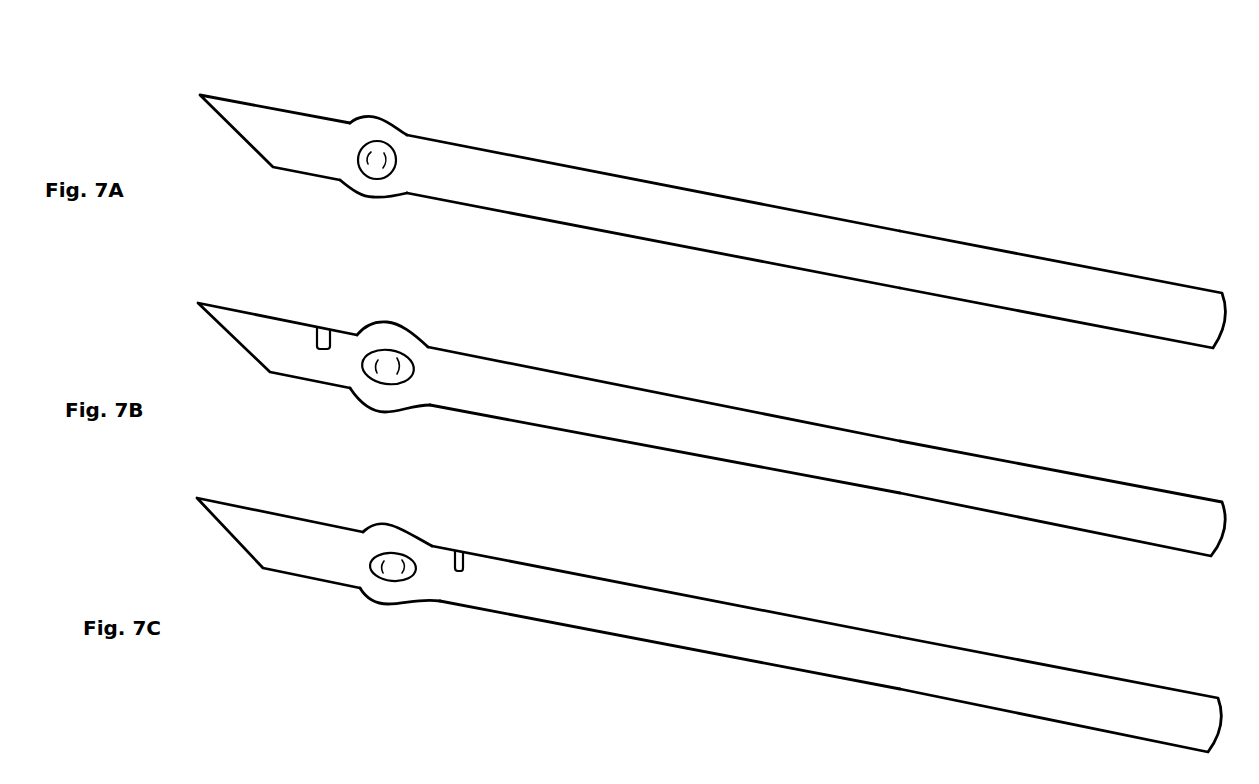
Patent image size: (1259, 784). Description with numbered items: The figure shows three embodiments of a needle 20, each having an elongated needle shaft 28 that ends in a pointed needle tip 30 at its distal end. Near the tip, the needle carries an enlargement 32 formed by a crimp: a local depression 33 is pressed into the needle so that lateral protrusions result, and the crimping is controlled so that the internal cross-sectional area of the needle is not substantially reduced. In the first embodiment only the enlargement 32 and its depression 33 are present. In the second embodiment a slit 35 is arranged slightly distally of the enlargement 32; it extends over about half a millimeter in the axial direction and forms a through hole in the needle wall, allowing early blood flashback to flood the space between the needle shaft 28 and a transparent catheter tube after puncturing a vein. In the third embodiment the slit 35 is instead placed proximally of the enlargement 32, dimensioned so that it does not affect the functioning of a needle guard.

In FIG. 7A, the needle 20 is at (827, 217).
In FIG. 7B, the needle 20 is at (807, 420).
In FIG. 7C, the needle 20 is at (737, 607).
In FIG. 7A, the needle shaft 28 is at (658, 210).
In FIG. 7B, the needle shaft 28 is at (597, 405).
In FIG. 7C, the needle shaft 28 is at (568, 593).
In FIG. 7A, the needle tip 30 is at (212, 117).
In FIG. 7B, the needle tip 30 is at (218, 322).
In FIG. 7C, the needle tip 30 is at (218, 524).
In FIG. 7A, the enlargement 32 is at (380, 128).
In FIG. 7B, the enlargement 32 is at (407, 328).
In FIG. 7C, the enlargement 32 is at (405, 531).
In FIG. 7A, the local depression 33 is at (405, 162).
In FIG. 7B, the slit 35 is at (317, 326).
In FIG. 7C, the slit 35 is at (463, 571).